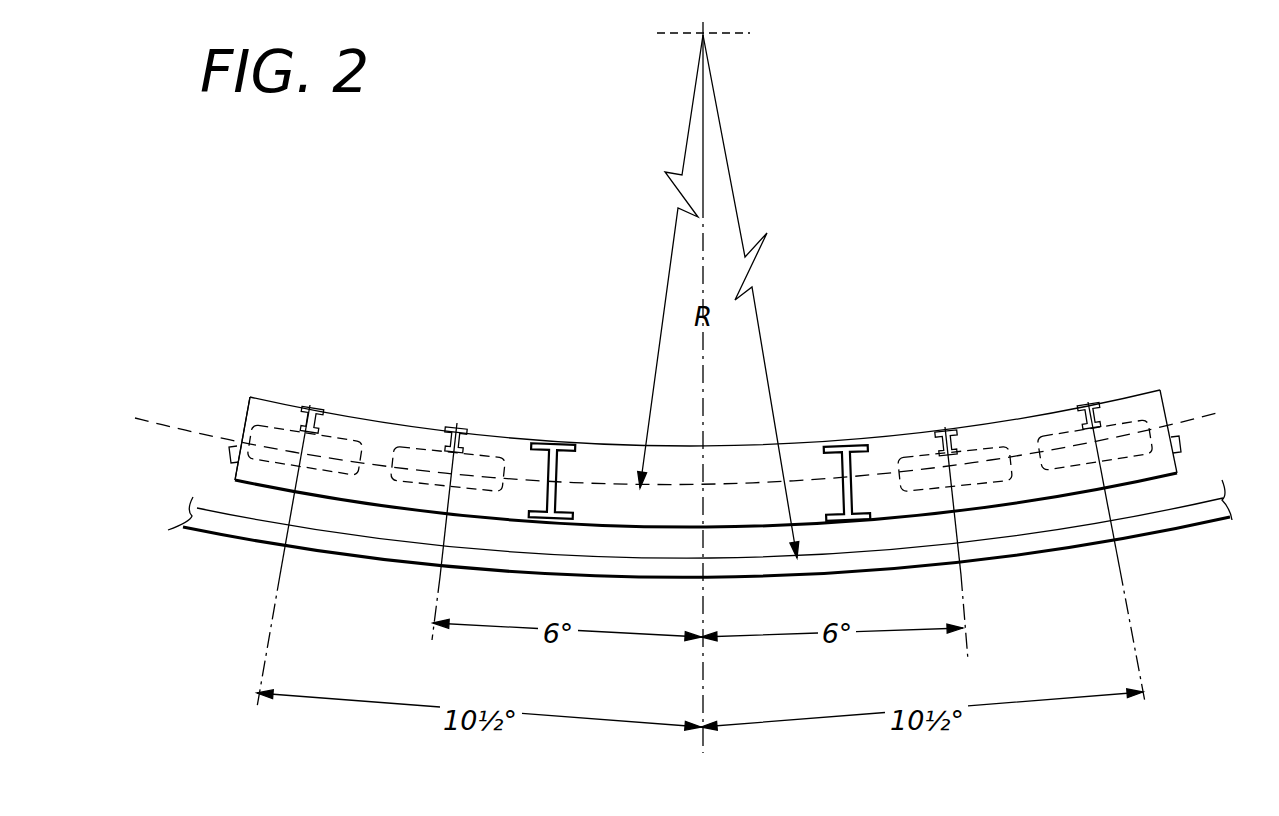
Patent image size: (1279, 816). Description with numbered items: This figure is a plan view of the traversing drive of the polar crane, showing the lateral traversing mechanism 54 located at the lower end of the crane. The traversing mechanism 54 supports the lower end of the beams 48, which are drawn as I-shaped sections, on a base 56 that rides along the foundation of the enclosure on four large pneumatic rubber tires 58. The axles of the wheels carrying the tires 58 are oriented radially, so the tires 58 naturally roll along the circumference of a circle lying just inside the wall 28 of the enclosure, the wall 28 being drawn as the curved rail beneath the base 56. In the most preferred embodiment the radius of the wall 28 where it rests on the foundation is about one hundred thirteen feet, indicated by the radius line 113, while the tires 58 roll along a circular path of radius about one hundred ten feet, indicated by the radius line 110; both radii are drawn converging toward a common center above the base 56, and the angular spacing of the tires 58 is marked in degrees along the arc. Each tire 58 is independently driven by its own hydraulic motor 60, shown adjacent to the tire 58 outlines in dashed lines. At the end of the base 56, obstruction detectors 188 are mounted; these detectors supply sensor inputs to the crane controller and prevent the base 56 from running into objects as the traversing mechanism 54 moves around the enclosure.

The wall 28 is at (214, 535).
The beams 48 is at (542, 446).
The lateral traversing mechanism 54 is at (396, 424).
The base 56 is at (270, 398).
The pneumatic rubber tires 58 is at (421, 446).
The hydraulic motor 60 is at (962, 433).
The obstruction detectors 188 is at (1183, 444).
The inner radius 110 ft 110 is at (667, 261).
The outer radius 113 ft 113 is at (751, 296).